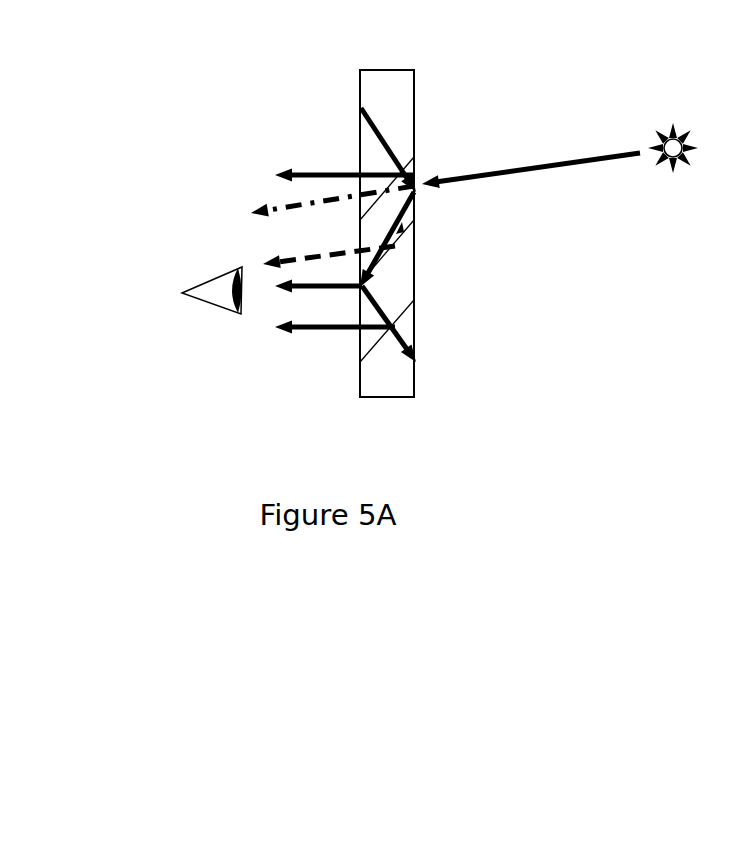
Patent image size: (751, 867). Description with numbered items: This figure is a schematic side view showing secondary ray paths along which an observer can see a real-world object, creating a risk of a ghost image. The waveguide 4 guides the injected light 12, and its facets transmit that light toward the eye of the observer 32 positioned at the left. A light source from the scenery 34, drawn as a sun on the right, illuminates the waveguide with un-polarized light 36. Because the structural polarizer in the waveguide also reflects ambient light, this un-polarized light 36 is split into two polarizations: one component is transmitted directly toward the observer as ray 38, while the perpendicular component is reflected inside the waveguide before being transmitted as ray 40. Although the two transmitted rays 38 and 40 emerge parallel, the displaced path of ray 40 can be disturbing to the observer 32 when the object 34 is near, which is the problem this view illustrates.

The waveguide 4 is at (400, 70).
The injected light 12 is at (388, 145).
The observer 32 is at (209, 285).
The light source from the scenery 34 is at (682, 136).
The un-polarized light 36 is at (531, 161).
The directly transmitted ray 38 is at (319, 201).
The reflected then transmitted ray 40 is at (329, 249).